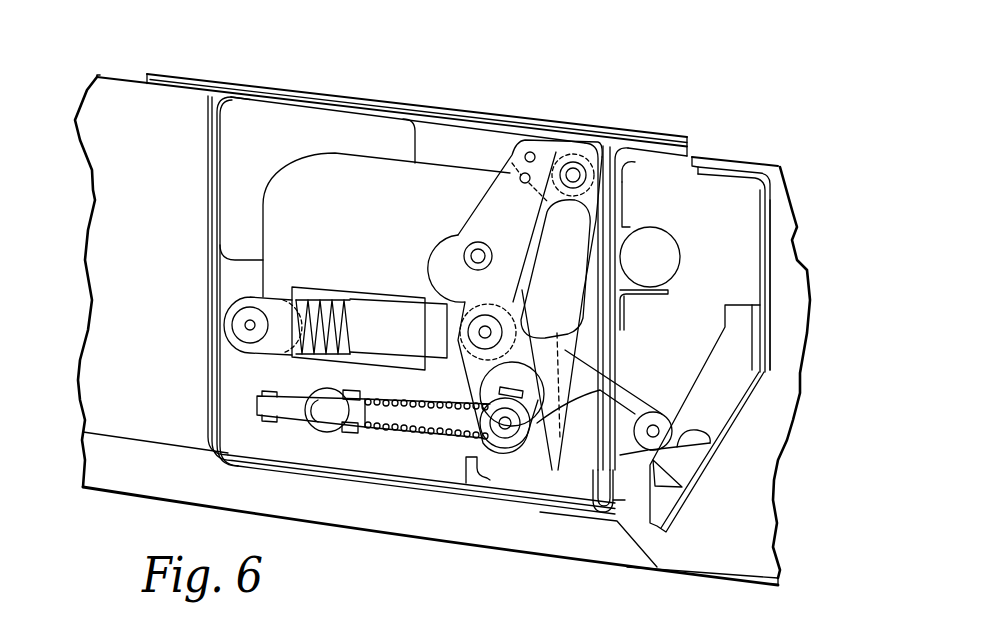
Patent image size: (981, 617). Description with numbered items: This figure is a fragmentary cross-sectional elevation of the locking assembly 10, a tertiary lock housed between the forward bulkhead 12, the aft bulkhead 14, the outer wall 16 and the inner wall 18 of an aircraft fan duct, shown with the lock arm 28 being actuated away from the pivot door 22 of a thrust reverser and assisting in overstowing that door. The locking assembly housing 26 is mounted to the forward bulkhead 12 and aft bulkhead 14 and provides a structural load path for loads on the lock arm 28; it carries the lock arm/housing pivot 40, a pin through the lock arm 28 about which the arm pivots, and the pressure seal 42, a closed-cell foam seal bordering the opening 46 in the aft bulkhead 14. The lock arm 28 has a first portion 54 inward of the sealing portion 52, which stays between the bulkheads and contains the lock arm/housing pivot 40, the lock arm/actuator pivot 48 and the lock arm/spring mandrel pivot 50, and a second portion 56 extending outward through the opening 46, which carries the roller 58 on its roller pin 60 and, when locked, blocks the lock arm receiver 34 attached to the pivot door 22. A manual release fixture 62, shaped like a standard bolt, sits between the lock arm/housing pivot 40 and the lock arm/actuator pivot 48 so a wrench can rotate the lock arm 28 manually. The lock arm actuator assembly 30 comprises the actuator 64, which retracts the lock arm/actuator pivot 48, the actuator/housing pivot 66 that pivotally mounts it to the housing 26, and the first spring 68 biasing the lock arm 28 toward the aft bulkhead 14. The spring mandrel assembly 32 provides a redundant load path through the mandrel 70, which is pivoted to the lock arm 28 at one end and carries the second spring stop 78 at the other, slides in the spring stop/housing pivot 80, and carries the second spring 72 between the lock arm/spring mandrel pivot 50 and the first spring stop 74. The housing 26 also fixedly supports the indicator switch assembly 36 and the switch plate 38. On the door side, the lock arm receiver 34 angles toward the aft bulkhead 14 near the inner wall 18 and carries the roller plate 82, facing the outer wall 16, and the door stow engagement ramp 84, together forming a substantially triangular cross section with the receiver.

The locking assembly 10 is at (115, 22).
The forward bulkhead 12 is at (210, 167).
The aft bulkhead 14 is at (630, 172).
The outer wall 16 is at (330, 95).
The inner wall 18 is at (402, 483).
The pivot door 22 is at (743, 163).
The locking assembly housing 26 is at (240, 113).
The lock arm 28 is at (474, 170).
The lock arm actuator assembly 30 is at (318, 250).
The spring mandrel assembly 32 is at (275, 378).
The lock arm receiver 34 is at (742, 337).
The indicator switch assembly 36 is at (523, 360).
The switch plate 38 is at (513, 432).
The lock arm/housing pivot 40 is at (577, 168).
The pressure seal 42 is at (578, 516).
The opening 46 is at (624, 360).
The lock arm/actuator pivot 48 is at (483, 327).
The lock arm/spring mandrel pivot 50 is at (508, 430).
The sealing portion 52 is at (580, 492).
The first portion 54 is at (487, 213).
The second portion 56 is at (633, 390).
The roller 58 is at (670, 413).
The roller pin 60 is at (647, 444).
The manual release fixture 62 is at (478, 253).
The actuator 64 is at (353, 288).
The actuator/housing pivot 66 is at (247, 325).
The first spring 68 is at (322, 298).
The mandrel 70 is at (403, 413).
The second spring 72 is at (372, 438).
The first spring stop 74 is at (358, 427).
The second spring stop 78 is at (277, 422).
The spring stop/housing pivot 80 is at (325, 430).
The roller plate 82 is at (703, 433).
The door stow engagement ramp 84 is at (625, 500).